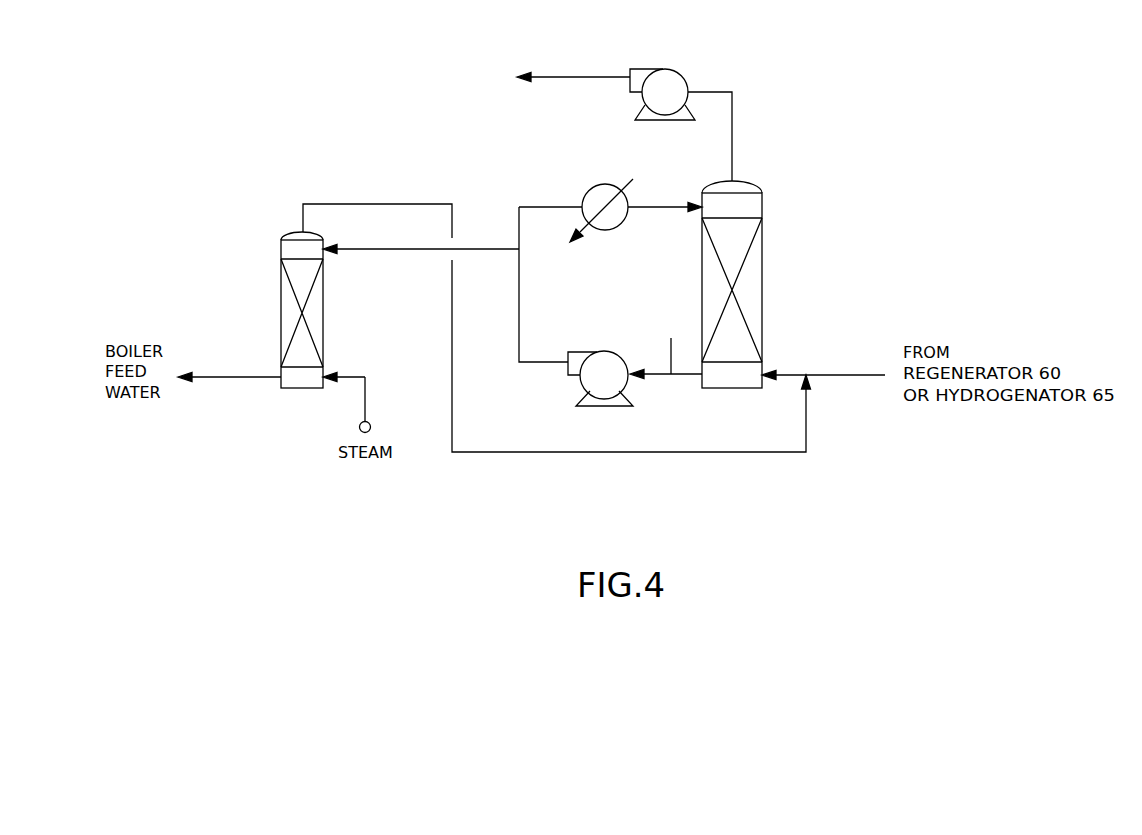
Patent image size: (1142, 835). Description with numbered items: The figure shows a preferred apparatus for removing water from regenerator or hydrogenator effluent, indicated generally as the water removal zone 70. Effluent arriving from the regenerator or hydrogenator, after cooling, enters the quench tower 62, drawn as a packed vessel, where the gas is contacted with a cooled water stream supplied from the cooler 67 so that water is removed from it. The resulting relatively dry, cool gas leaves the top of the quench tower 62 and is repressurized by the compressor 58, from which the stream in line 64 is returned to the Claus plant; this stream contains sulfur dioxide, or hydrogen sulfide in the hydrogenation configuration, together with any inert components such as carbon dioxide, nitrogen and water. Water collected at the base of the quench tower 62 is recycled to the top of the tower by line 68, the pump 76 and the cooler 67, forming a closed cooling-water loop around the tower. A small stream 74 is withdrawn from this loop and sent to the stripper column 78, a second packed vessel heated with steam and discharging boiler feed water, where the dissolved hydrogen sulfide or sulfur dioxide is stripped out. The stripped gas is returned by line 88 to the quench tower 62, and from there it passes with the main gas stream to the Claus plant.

The compressor 58 is at (668, 70).
The line 64 is at (558, 76).
The cooler 67 is at (586, 191).
The water removal zone 70 is at (789, 269).
The quench tower 62 is at (762, 280).
The line 68 is at (666, 344).
The pump 76 is at (582, 385).
The stream 74 is at (380, 249).
The stripper column 78 is at (325, 273).
The line 88 is at (368, 204).